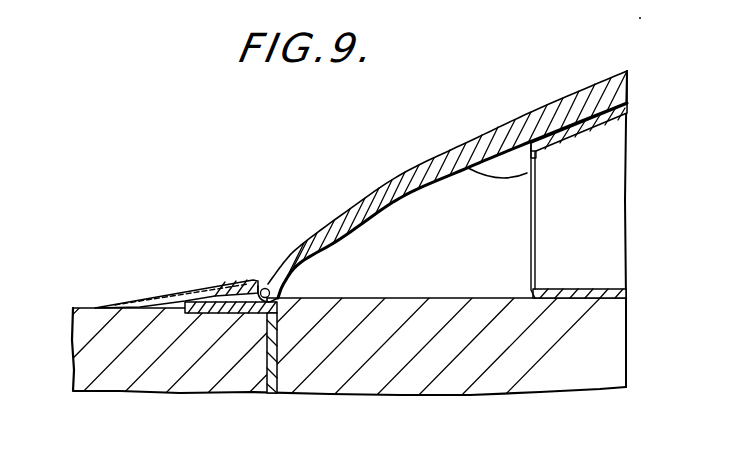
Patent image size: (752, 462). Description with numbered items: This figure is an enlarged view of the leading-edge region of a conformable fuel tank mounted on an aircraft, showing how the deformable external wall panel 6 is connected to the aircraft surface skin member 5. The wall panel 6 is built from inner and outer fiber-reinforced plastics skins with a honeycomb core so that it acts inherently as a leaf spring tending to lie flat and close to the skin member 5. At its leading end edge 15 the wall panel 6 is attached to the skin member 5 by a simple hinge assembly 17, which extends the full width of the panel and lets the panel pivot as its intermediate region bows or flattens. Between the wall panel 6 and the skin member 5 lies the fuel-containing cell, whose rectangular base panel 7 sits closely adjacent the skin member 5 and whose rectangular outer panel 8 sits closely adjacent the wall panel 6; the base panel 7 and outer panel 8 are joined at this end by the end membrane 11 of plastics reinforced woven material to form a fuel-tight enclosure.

The surface skin member 5 is at (125, 380).
The deformable external wall panel 6 is at (507, 122).
The base panel 7 is at (600, 290).
The outer panel 8 is at (575, 123).
The end membrane 11 is at (450, 151).
The end edge 15 is at (316, 232).
The hinge assembly 17 is at (263, 283).